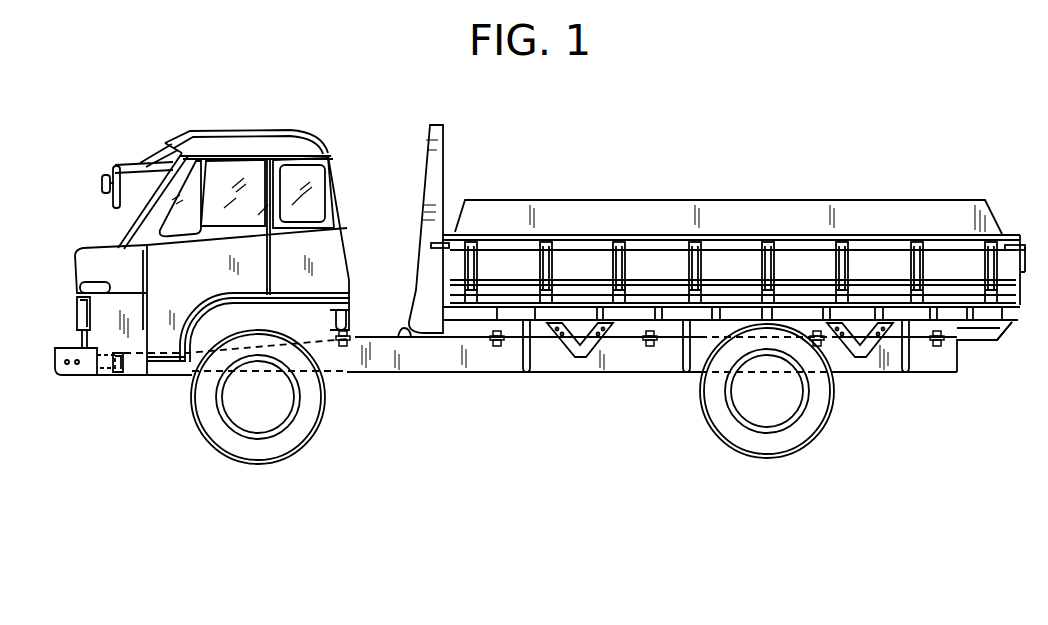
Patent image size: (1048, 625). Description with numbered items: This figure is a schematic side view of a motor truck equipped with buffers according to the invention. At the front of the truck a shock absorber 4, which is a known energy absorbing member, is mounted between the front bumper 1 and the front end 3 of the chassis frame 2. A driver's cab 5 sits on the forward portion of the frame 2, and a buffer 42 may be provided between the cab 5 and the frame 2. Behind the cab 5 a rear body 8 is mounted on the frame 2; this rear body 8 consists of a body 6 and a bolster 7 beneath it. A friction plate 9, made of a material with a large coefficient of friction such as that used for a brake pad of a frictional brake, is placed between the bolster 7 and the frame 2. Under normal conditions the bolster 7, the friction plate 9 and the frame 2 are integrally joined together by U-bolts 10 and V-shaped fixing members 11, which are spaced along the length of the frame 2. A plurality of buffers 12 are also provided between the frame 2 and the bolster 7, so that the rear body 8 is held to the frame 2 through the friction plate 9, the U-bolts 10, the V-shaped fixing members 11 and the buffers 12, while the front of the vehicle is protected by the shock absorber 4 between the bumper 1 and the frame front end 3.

The front bumper 1 is at (55, 356).
The chassis frame 2 is at (383, 363).
The front end 3 is at (133, 363).
The shock absorber 4 is at (105, 368).
The buffer 42 is at (344, 352).
The driver's cab 5 is at (276, 150).
The body 6 is at (727, 235).
The bolster 7 is at (997, 333).
The rear body 8 is at (892, 193).
The friction plate 9 is at (409, 337).
The U-bolts 10 is at (530, 352).
The V-shaped fixing members 11 is at (570, 360).
The buffers 12 is at (496, 350).